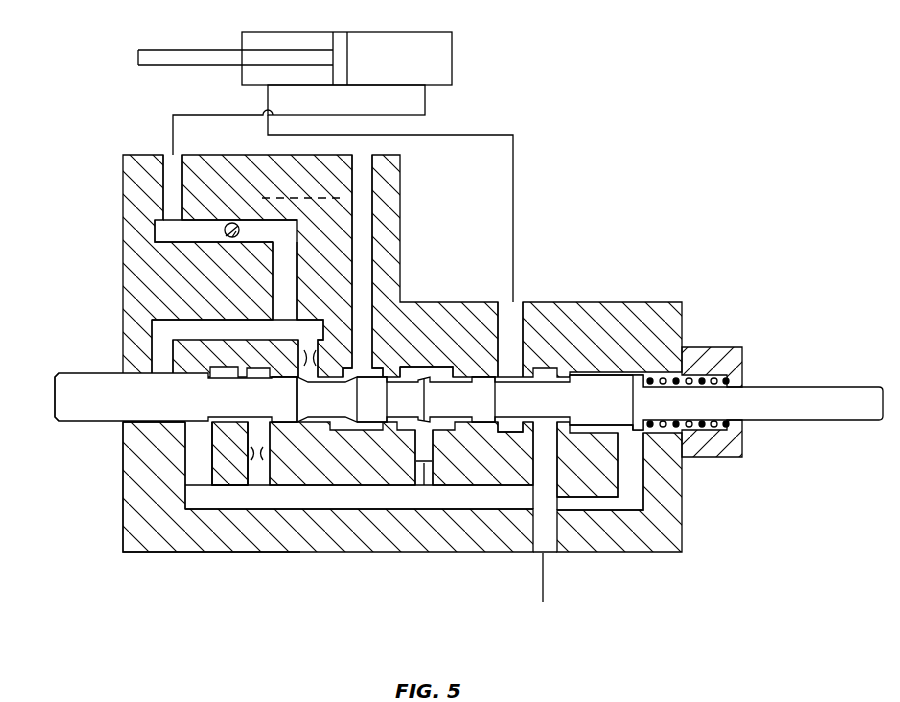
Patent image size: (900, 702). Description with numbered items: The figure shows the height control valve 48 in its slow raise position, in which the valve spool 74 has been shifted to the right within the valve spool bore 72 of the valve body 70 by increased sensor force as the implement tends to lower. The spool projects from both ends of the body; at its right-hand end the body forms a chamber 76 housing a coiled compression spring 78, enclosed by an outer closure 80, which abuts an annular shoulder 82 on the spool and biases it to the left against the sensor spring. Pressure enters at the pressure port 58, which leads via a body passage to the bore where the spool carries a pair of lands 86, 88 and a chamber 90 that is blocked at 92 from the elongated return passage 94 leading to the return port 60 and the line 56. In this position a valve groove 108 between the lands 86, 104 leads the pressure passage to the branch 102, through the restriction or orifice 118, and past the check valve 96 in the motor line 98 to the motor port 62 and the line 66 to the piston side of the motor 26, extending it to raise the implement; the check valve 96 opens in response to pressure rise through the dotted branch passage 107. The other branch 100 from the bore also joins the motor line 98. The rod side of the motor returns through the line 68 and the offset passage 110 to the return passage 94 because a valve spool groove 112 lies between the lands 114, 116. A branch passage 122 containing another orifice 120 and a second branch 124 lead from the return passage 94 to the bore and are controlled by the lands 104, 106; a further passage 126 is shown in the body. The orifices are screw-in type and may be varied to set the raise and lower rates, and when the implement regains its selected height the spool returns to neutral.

The motor 26 is at (452, 34).
The line 66 is at (425, 105).
The motor port 62 is at (168, 154).
The line 68 is at (513, 156).
The pressure port 58 is at (362, 150).
The height control valve 48 is at (121, 252).
The return passage 94 is at (357, 508).
The orifice 118 is at (300, 357).
The valve body 70 is at (123, 537).
The branch passage 122 is at (247, 475).
The motor line 98 is at (163, 190).
The check valve 96 is at (232, 223).
The branch passage 107 is at (317, 182).
The pressure passage 82 is at (372, 229).
The branch 100 is at (153, 325).
The branch 102 is at (315, 322).
The valve spool bore 72 is at (136, 370).
The offset passage 110 is at (522, 352).
The land 88 is at (431, 375).
The valve spool groove 112 is at (512, 428).
The land 86 is at (382, 417).
The chamber 90 is at (443, 427).
The blockage 92 is at (420, 465).
The second branch 124 is at (185, 487).
The orifice 120 is at (260, 462).
The return port 60 is at (548, 555).
The line 56 is at (542, 583).
The passage 126 is at (637, 498).
The land 106 is at (125, 408).
The valve spool 74 is at (98, 420).
The land 104 is at (282, 417).
The valve groove 108 is at (337, 417).
The land 114 is at (476, 378).
The chamber 76 is at (583, 372).
The land 116 is at (610, 420).
The coiled compression spring 78 is at (702, 380).
The outer closure 80 is at (742, 362).